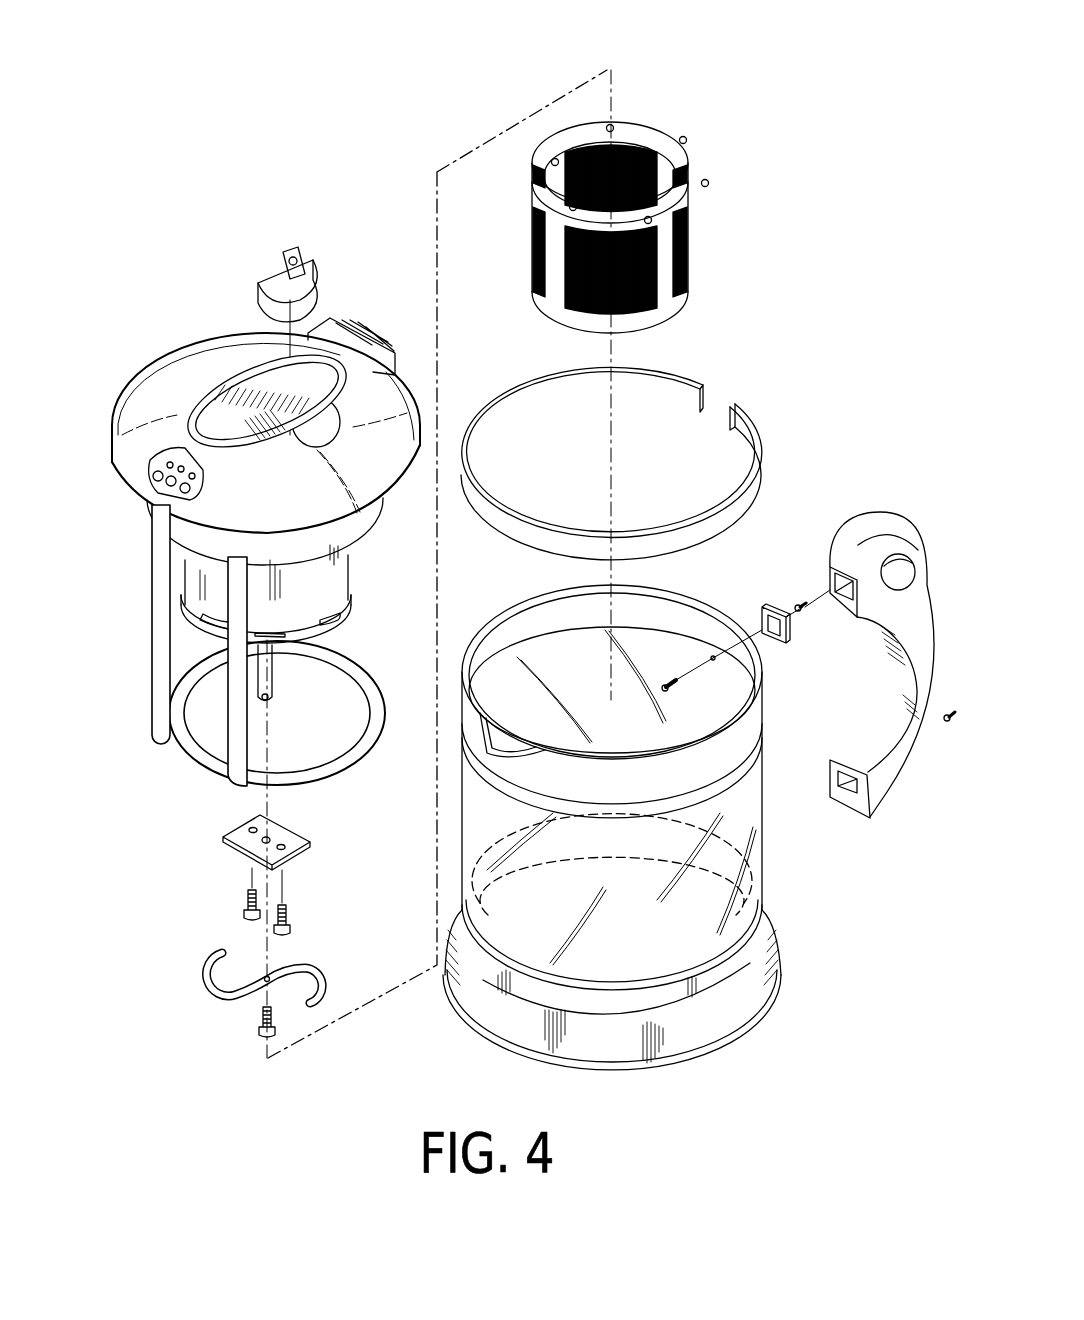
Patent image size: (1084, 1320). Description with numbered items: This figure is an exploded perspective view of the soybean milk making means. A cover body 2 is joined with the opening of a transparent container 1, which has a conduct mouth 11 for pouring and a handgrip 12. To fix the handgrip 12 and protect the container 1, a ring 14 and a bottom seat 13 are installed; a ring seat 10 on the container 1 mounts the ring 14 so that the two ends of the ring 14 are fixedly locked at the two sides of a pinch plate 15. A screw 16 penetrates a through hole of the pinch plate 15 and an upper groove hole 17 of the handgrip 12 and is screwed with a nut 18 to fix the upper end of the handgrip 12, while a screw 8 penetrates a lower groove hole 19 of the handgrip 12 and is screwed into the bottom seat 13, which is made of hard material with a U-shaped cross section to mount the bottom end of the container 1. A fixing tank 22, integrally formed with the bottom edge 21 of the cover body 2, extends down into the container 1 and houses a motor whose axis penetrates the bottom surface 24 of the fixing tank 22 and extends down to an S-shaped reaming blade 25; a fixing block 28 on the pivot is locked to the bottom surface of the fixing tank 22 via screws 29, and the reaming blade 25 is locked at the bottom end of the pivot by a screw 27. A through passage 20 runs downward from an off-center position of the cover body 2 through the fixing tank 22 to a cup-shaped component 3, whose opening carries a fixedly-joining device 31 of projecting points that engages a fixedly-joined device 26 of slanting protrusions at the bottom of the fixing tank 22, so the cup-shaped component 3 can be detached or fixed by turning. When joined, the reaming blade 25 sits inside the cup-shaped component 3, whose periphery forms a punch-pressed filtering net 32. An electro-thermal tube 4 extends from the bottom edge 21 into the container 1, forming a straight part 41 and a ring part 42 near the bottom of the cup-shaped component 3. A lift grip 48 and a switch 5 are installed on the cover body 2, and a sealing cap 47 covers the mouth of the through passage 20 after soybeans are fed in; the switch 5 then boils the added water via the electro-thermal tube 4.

The container 1 is at (635, 793).
The cover body 2 is at (256, 453).
The cup-shaped component 3 is at (660, 188).
The electro-thermal tube 4 is at (251, 666).
The switch 5 is at (156, 479).
The screw 8 is at (943, 730).
The ring seat 10 is at (720, 782).
The conduct mouth 11 is at (478, 716).
The handgrip 12 is at (862, 661).
The bottom seat 13 is at (722, 1023).
The ring 14 is at (742, 415).
The pinch plate 15 is at (770, 605).
The screw 16 is at (668, 680).
The upper groove hole 17 is at (838, 575).
The nut 18 is at (797, 603).
The lower groove hole 19 is at (849, 800).
The through passage 20 is at (343, 400).
The bottom edge 21 is at (170, 528).
The fixing tank 22 is at (328, 580).
The bottom surface 24 is at (325, 630).
The reaming blade 25 is at (225, 978).
The fixedly-joined device 26 is at (190, 607).
The screw 27 is at (262, 1018).
The fixing block 28 is at (225, 834).
The screws 29 is at (245, 903).
The fixedly-joining device 31 is at (686, 137).
The filtering net 32 is at (614, 148).
The straight part 41 is at (158, 688).
The ring part 42 is at (355, 748).
The sealing cap 47 is at (262, 276).
The lift grip 48 is at (240, 392).